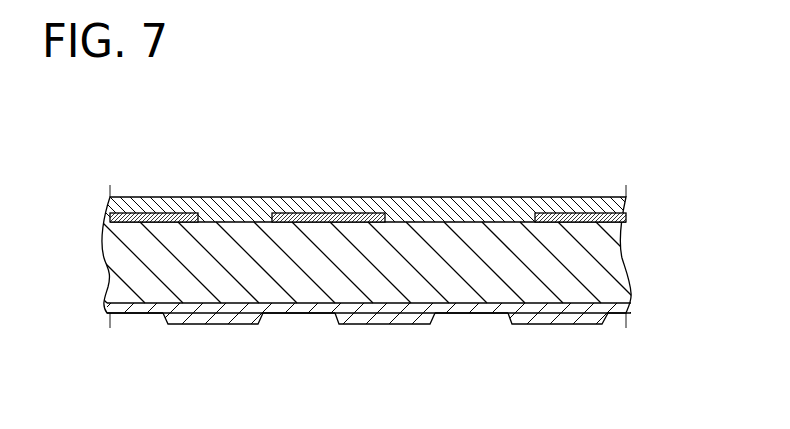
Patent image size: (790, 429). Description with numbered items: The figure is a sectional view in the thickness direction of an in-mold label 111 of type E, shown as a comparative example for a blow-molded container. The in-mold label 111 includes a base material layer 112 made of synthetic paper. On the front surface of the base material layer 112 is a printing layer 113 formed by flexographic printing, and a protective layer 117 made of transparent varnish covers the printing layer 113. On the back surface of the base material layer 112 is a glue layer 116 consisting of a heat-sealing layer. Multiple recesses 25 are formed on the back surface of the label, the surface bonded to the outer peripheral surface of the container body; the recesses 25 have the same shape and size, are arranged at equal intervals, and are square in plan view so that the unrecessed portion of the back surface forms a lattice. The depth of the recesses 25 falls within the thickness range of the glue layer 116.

The in-mold label 111 is at (580, 176).
The base material layer 112 is at (608, 262).
The printing layer 113 is at (328, 215).
The protective layer 117 is at (452, 213).
The glue layer 116 is at (552, 317).
The recesses 25 is at (135, 315).